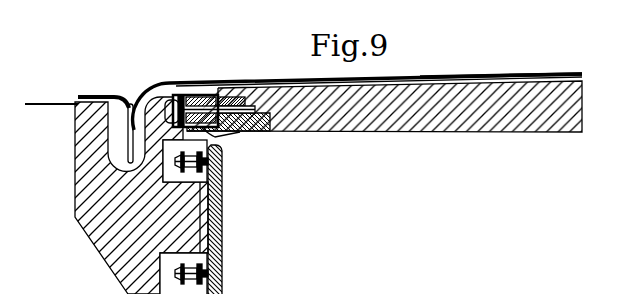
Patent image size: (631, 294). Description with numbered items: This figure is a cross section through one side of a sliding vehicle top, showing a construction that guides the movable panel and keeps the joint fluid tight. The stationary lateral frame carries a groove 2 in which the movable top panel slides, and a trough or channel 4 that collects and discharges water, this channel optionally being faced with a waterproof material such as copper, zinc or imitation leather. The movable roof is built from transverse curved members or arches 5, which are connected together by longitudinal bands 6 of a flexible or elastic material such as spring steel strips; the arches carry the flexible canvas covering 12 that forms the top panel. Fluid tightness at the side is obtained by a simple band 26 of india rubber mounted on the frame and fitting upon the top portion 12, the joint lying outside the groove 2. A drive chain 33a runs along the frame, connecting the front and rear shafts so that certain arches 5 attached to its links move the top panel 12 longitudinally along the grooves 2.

The groove 2 is at (183, 99).
The trough or channel 4 is at (117, 145).
The curved member or arch 5 is at (413, 91).
The longitudinal band 6 is at (520, 82).
The flexible covering 12 is at (163, 86).
The band of india rubber 26 is at (125, 94).
The chain 33a is at (207, 161).